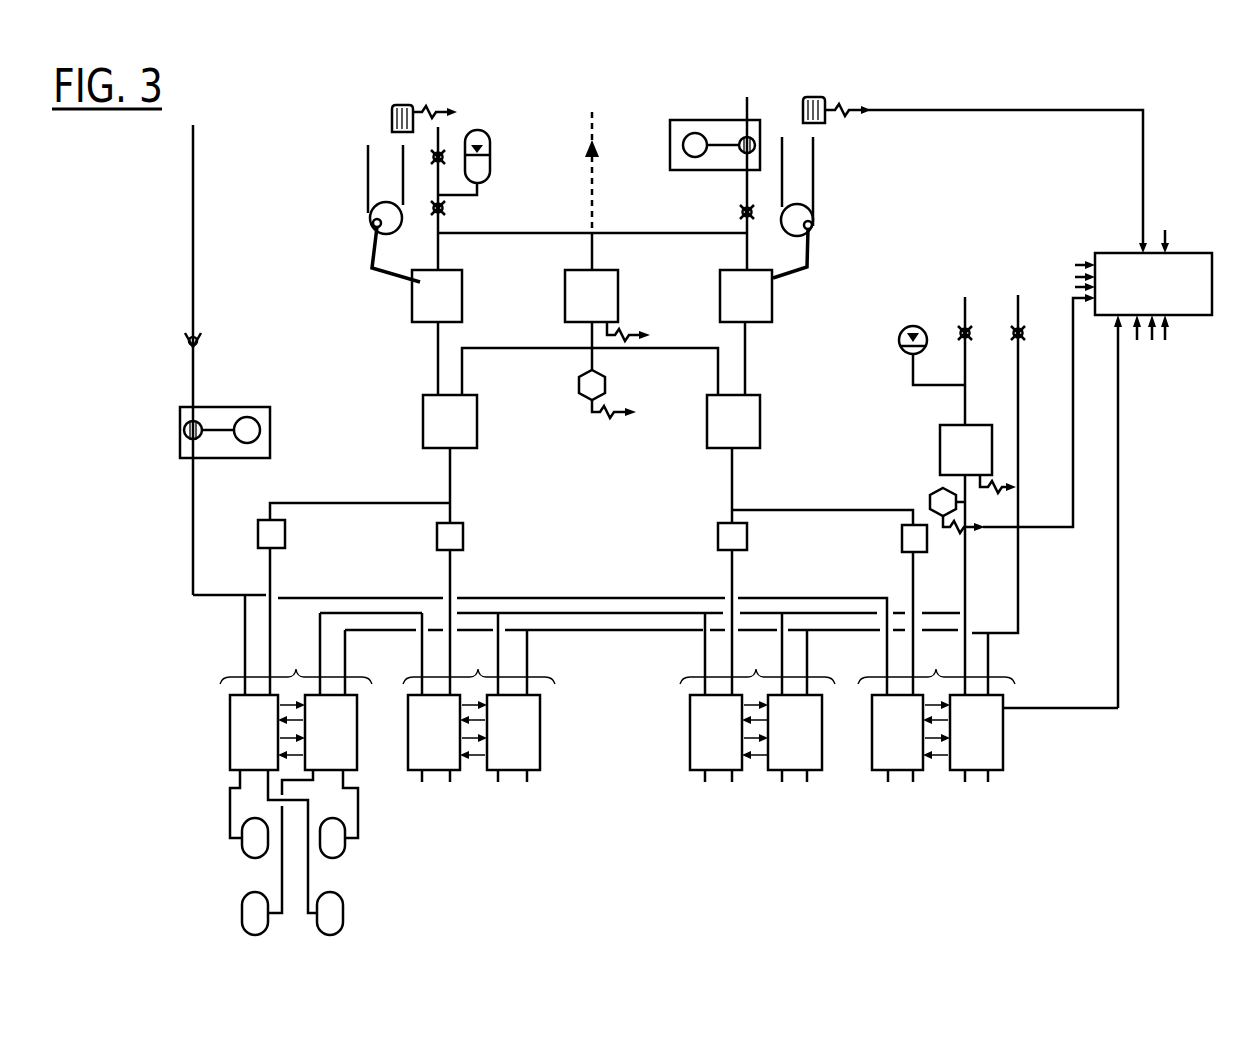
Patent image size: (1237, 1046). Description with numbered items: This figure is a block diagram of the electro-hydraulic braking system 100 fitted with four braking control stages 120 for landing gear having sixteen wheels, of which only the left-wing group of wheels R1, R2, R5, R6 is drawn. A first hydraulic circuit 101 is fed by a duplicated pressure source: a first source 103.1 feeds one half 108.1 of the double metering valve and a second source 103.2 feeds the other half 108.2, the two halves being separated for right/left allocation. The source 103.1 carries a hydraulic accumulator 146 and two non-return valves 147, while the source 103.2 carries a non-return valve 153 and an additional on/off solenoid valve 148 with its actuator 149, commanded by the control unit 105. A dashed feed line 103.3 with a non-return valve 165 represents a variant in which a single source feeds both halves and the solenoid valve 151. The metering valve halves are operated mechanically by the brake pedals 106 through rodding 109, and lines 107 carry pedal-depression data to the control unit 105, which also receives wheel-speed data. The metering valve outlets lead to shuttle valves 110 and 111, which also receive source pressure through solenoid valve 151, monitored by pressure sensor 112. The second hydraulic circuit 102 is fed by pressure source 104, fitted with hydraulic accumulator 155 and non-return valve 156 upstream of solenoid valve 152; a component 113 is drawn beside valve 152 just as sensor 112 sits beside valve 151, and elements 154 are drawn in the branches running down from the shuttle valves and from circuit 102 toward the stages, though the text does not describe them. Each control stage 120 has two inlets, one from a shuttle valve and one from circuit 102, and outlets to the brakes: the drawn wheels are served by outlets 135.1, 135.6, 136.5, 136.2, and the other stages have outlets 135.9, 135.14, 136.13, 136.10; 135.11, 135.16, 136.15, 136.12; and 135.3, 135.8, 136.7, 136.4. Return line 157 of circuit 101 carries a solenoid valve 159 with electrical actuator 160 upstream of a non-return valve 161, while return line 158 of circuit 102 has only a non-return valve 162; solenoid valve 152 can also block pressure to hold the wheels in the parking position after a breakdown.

The electro-hydraulic braking system 100 is at (958, 94).
The first hydraulic circuit 101 is at (530, 226).
The second hydraulic circuit 102 is at (968, 600).
The first hydraulic pressure source 103.1 is at (442, 135).
The second hydraulic pressure source 103.2 is at (749, 97).
The dashed feed line 103.3 is at (594, 194).
The hydraulic pressure source 104 is at (968, 300).
The control unit 105 is at (1098, 252).
The brake pedals 106 is at (400, 104).
The lines 107 is at (441, 106).
The one half of double metering valve 108.1 is at (412, 318).
The other half of double metering valve 108.2 is at (773, 300).
The rodding 109 is at (365, 180).
The shuttle valve 110 is at (423, 425).
The shuttle valve 111 is at (760, 425).
The pressure sensor 112 is at (580, 392).
The control pressure relief valve 113 is at (930, 495).
The braking control stage 120 is at (617, 661).
The control stage outlet 135.1 is at (235, 770).
The control stage outlet 135.3 is at (888, 784).
The control stage outlet 135.6 is at (254, 732).
The control stage outlet 135.8 is at (913, 784).
The control stage outlet 135.9 is at (422, 784).
The control stage outlet 135.11 is at (705, 784).
The control stage outlet 135.14 is at (450, 784).
The control stage outlet 135.16 is at (732, 784).
The control stage outlet 136.2 is at (347, 772).
The control stage outlet 136.4 is at (988, 784).
The control stage outlet 136.5 is at (331, 732).
The control stage outlet 136.7 is at (965, 784).
The control stage outlet 136.10 is at (527, 784).
The control stage outlet 136.12 is at (807, 784).
The control stage outlet 136.13 is at (498, 784).
The control stage outlet 136.15 is at (782, 784).
The hydraulic accumulator 146 is at (492, 165).
The non-return valves 147 is at (432, 158).
The additional solenoid valve 148 is at (742, 136).
The actuator 149 is at (685, 130).
The solenoid valve 151 is at (619, 295).
The solenoid valve 152 is at (940, 445).
The non-return valve 153 is at (740, 213).
The pressure sensor 154 is at (258, 535).
The hydraulic accumulator 155 is at (900, 352).
The non-return valve 156 is at (962, 330).
The return line 157 is at (568, 627).
The return line 158 is at (1020, 580).
The solenoid valve 159 is at (198, 420).
The electrical actuator 160 is at (250, 416).
The non-return valve 161 is at (203, 348).
The non-return valve 162 is at (1022, 338).
The non-return valve 165 is at (594, 143).
The wheel R1 is at (247, 852).
The wheel R2 is at (340, 850).
The wheel R5 is at (242, 914).
The wheel R6 is at (343, 914).